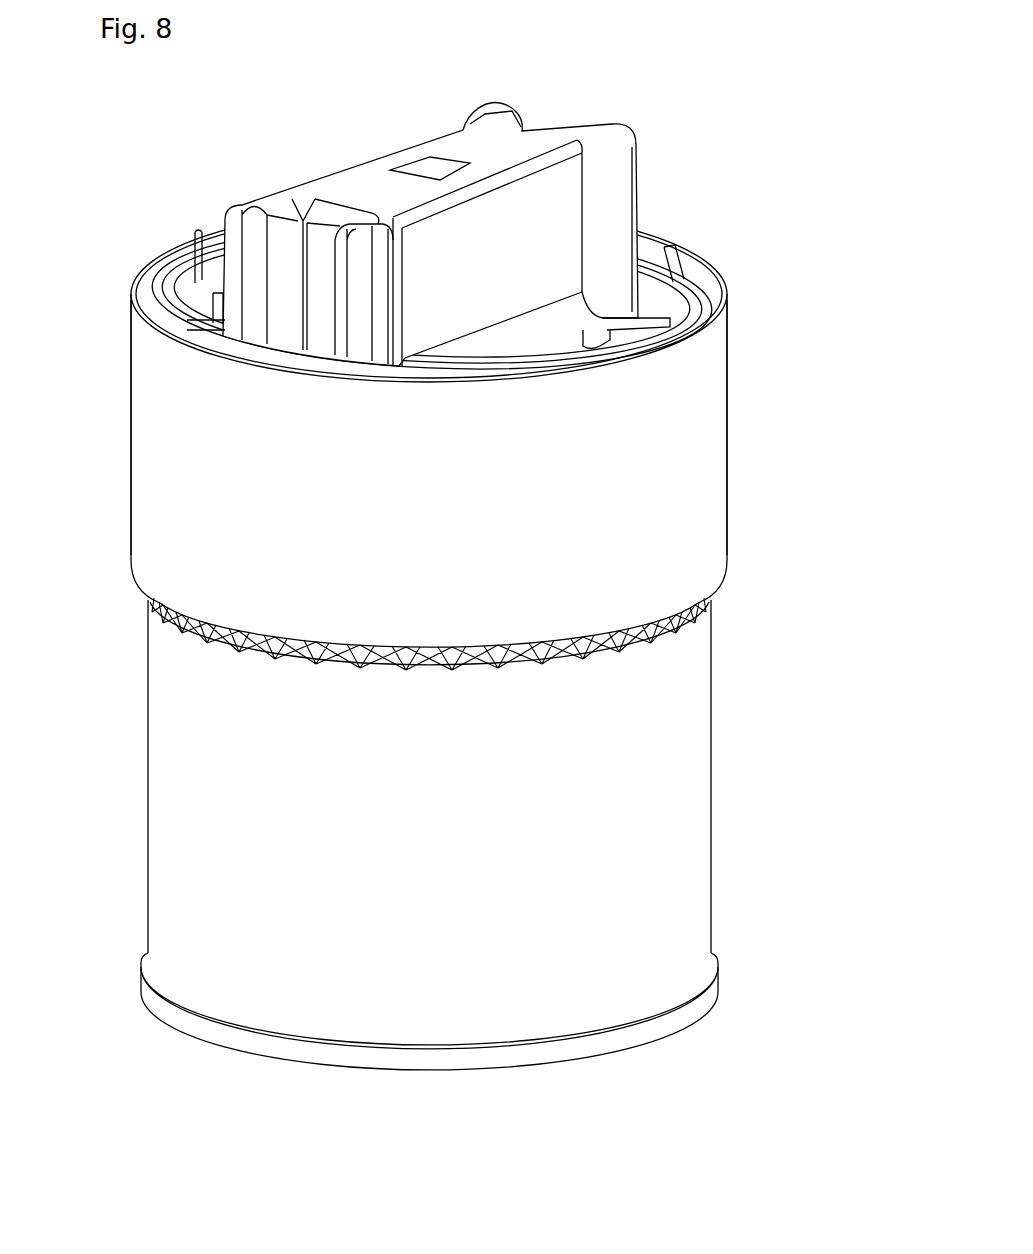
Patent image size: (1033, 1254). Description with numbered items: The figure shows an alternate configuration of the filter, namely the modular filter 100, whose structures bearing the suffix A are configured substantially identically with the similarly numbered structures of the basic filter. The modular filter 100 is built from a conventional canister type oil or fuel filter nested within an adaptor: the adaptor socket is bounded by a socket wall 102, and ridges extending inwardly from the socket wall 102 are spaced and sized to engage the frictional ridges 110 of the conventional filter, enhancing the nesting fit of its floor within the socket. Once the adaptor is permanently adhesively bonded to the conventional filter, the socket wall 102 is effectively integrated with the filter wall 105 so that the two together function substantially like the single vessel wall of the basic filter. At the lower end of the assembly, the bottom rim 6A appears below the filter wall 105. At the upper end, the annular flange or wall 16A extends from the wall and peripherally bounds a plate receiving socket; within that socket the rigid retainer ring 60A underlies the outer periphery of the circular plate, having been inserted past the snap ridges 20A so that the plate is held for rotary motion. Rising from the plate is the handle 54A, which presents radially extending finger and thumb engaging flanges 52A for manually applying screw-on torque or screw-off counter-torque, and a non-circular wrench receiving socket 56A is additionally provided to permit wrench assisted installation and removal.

The modular filter 100 is at (435, 582).
The socket wall 102 is at (176, 540).
The filter wall 105 is at (186, 770).
The frictional ridges 110 is at (628, 641).
The base rim 6A is at (488, 1056).
The annular flange or wall 16A is at (707, 342).
The snap ridges 20A is at (200, 282).
The finger and thumb engaging flanges 52A is at (603, 140).
The handle 54A is at (443, 148).
The wrench receiving socket 56A is at (425, 172).
The retainer ring 60A is at (177, 305).